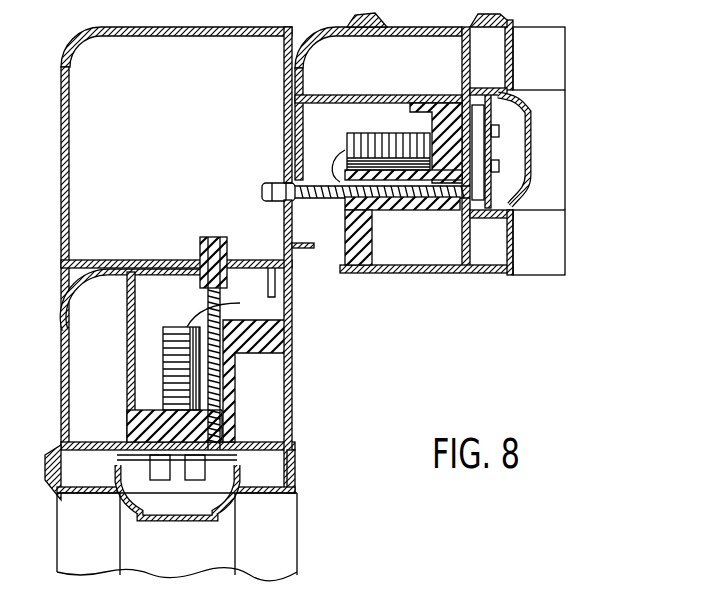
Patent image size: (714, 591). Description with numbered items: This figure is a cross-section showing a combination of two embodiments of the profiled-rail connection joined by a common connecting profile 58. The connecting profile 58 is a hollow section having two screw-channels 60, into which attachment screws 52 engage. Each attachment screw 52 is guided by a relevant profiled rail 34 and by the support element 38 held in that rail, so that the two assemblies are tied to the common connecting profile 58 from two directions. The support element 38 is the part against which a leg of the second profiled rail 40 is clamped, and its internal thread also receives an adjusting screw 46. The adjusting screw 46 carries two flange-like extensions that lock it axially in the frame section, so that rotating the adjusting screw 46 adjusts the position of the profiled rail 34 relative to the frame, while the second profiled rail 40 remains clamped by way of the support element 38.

The profiled rail 34 is at (475, 52).
The support element 38 is at (447, 152).
The second profiled rail 40 is at (292, 318).
The adjusting screw 46 is at (222, 303).
The attachment screw 52 is at (402, 210).
The common connecting profile 58 is at (68, 77).
The screw-channel 60 is at (204, 237).